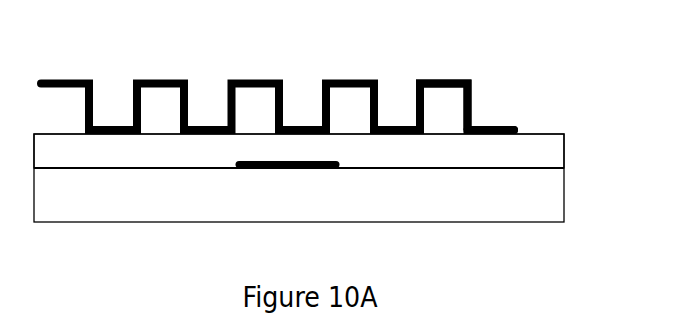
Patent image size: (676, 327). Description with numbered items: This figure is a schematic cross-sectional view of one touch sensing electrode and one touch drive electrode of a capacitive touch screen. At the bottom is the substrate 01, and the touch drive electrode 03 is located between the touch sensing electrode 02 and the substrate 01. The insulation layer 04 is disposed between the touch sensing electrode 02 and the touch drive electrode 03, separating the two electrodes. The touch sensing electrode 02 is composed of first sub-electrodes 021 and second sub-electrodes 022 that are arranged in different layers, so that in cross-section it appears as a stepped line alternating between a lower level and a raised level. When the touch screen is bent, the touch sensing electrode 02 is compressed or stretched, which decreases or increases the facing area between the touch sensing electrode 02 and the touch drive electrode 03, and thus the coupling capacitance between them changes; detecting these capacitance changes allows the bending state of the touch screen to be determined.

The substrate 01 is at (448, 202).
The insulation layer 04 is at (542, 145).
The touch drive electrode 03 is at (262, 168).
The touch sensing electrode 02 is at (277, 76).
The first sub-electrode 021 is at (497, 126).
The second sub-electrode 022 is at (444, 80).